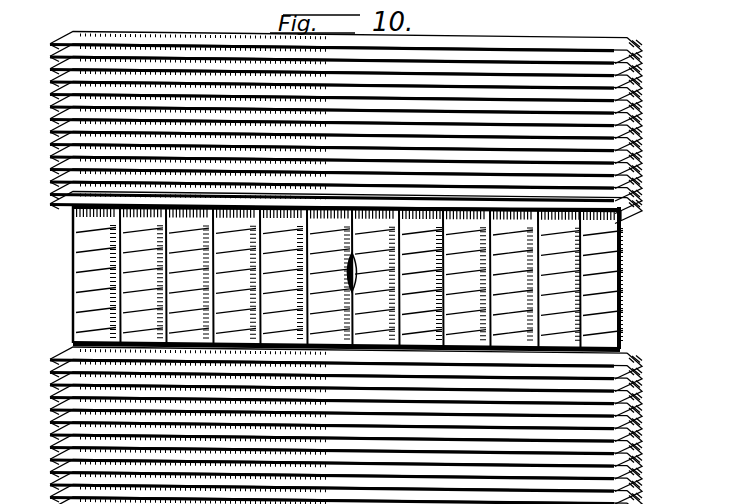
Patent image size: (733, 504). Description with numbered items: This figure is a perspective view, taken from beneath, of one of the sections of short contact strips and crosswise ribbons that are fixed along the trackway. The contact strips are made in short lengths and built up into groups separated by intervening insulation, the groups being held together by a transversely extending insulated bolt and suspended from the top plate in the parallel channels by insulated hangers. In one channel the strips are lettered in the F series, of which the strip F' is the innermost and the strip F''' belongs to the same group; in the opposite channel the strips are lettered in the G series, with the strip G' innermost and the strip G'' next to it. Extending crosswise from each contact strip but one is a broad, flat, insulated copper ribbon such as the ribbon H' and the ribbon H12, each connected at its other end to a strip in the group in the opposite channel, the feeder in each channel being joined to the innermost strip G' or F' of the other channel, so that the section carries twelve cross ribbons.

The upper stack of plates F''' is at (369, 123).
The contact strip F' is at (362, 205).
The copper ribbon H' is at (369, 277).
The cell of intermediate body H12 is at (75, 264).
The contact strip G' is at (359, 361).
The lower stack of plates G'' is at (365, 432).